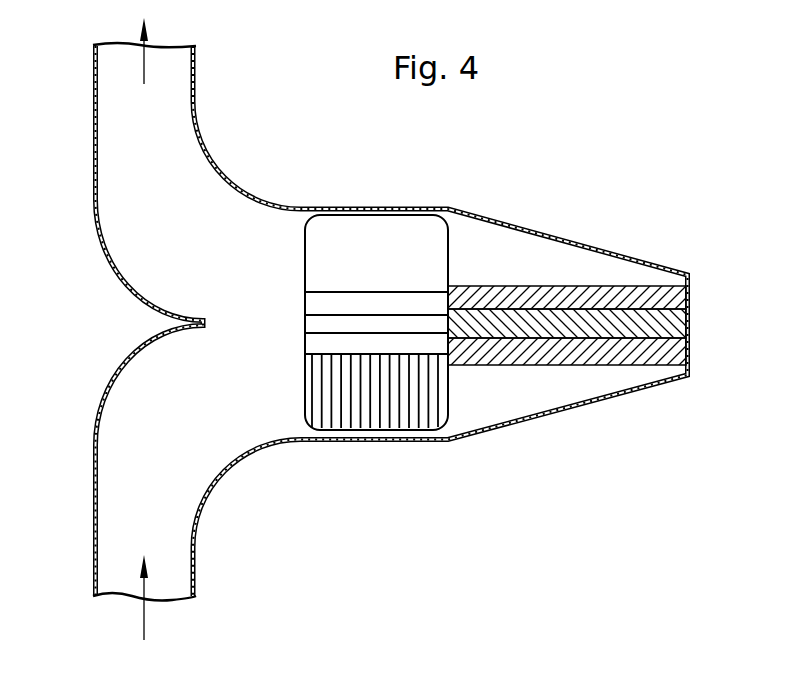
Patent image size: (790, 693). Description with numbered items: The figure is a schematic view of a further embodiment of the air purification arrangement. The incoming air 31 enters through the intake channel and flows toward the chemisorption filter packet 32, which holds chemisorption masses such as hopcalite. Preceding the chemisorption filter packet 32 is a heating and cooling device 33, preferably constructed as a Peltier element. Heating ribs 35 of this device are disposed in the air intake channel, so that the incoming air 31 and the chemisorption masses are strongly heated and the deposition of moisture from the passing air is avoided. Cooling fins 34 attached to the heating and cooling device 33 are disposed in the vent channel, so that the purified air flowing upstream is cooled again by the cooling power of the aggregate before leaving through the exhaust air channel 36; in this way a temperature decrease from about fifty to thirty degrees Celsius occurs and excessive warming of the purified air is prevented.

The incoming air 31 is at (160, 595).
The chemisorption filter packet 32 is at (608, 290).
The heating and cooling device 33 is at (422, 323).
The cooling fins 34 is at (383, 245).
The heating ribs 35 is at (376, 417).
The exhaust air channel 36 is at (173, 66).